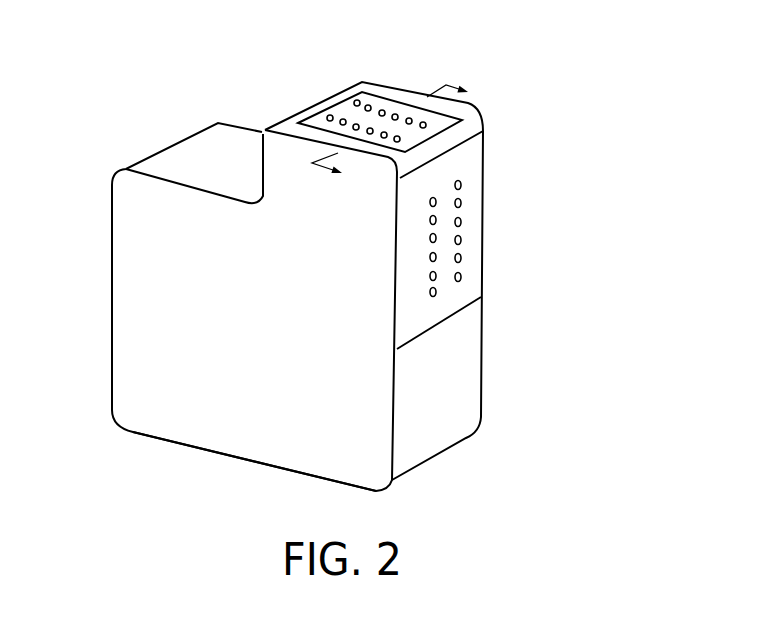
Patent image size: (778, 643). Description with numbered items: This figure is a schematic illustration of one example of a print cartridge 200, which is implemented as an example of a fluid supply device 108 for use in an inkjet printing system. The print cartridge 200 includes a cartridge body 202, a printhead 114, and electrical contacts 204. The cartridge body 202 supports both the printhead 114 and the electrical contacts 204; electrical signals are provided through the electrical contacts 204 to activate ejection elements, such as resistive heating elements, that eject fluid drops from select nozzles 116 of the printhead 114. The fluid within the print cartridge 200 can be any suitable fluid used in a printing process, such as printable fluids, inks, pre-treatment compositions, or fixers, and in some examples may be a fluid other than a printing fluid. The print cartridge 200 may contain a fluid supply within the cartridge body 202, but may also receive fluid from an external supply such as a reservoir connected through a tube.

The fluid supply device 108 is at (152, 77).
The print cartridge 200 is at (168, 124).
The cartridge body 202 is at (133, 302).
The electrical contacts 204 is at (472, 275).
The printhead 114 is at (377, 98).
The nozzles 116 is at (343, 122).